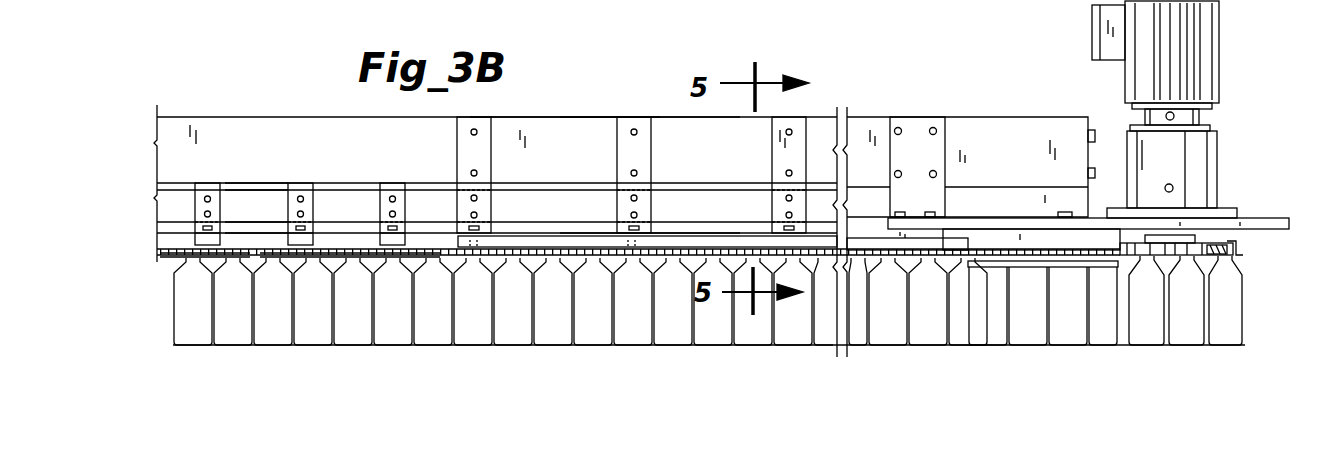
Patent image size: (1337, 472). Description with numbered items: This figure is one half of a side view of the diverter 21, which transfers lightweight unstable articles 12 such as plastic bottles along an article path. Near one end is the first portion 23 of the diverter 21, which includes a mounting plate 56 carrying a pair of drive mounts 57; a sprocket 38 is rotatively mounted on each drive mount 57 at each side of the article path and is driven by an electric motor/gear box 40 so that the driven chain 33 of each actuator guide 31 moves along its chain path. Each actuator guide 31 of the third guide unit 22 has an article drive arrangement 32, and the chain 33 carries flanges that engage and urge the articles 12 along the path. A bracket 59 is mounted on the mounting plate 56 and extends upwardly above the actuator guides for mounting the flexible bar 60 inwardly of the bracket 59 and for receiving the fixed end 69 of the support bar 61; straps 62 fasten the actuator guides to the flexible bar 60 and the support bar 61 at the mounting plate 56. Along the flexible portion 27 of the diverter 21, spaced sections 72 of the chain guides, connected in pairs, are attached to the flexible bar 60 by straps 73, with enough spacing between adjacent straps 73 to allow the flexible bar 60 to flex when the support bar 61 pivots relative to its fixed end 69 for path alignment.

The articles 12 is at (1009, 335).
The diverter 21 is at (298, 117).
The third guide unit 22 is at (648, 98).
The first portion 23 is at (1122, 250).
The flexible portion 27 is at (247, 206).
The actuator guide 31 is at (1134, 262).
The article drive arrangement 32 is at (1224, 257).
The driven chain 33 is at (1163, 258).
The sprocket 38 is at (1192, 262).
The electric motor/gear box 40 is at (1200, 72).
The mounting plate 56 is at (1005, 217).
The drive mount 57 is at (1205, 236).
The bracket 59 is at (1092, 148).
The flexible bar 60 is at (665, 206).
The support bar 61 is at (973, 138).
The straps 62 is at (800, 148).
The fixed end 69 is at (565, 117).
The spaced sections 72 is at (305, 246).
The straps 73 is at (304, 206).